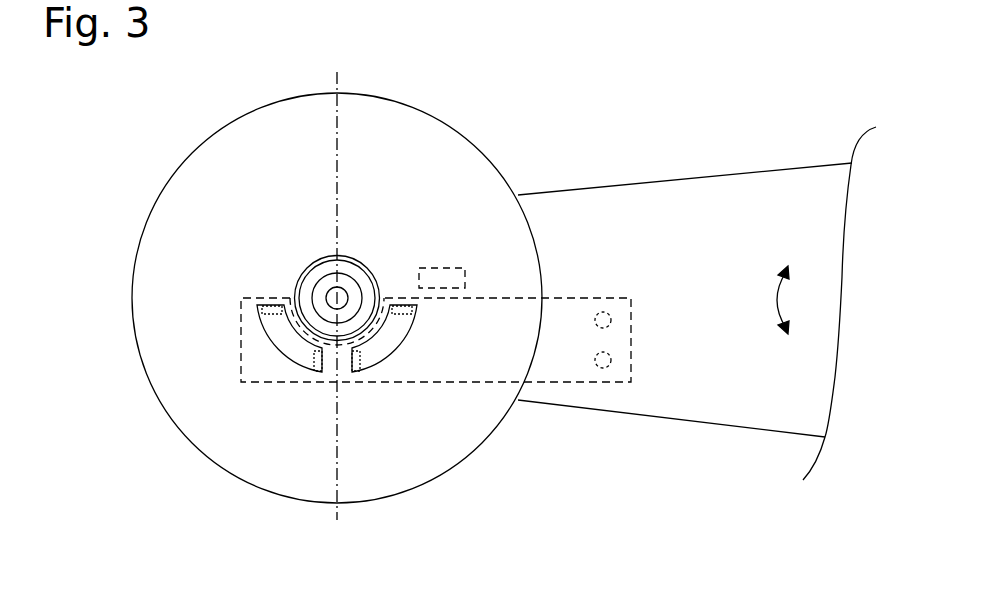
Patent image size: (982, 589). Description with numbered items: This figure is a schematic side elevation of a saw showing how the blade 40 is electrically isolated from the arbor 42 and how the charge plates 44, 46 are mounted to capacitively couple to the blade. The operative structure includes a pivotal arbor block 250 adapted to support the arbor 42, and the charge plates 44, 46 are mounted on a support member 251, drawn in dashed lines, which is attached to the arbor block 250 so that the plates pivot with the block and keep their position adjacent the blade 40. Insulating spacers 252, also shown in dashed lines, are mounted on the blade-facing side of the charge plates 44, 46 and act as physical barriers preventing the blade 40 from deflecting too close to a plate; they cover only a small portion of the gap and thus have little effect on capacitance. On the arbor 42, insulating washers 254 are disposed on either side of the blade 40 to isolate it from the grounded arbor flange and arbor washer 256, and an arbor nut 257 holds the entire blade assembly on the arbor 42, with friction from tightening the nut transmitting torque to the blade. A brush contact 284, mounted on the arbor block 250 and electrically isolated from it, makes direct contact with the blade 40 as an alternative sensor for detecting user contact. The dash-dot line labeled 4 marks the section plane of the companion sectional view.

The section line of FIG. 4 is at (338, 65).
The blade 40 is at (292, 153).
The arbor 42 is at (336, 299).
The charge plate 44 is at (293, 350).
The charge plate 46 is at (383, 353).
The arbor block 250 is at (700, 409).
The support member 251 is at (570, 305).
The insulating spacers 252 is at (270, 309).
The insulating washers 254 is at (317, 262).
The arbor washer 256 is at (346, 268).
The arbor nut 257 is at (353, 302).
The brush contact 284 is at (443, 272).